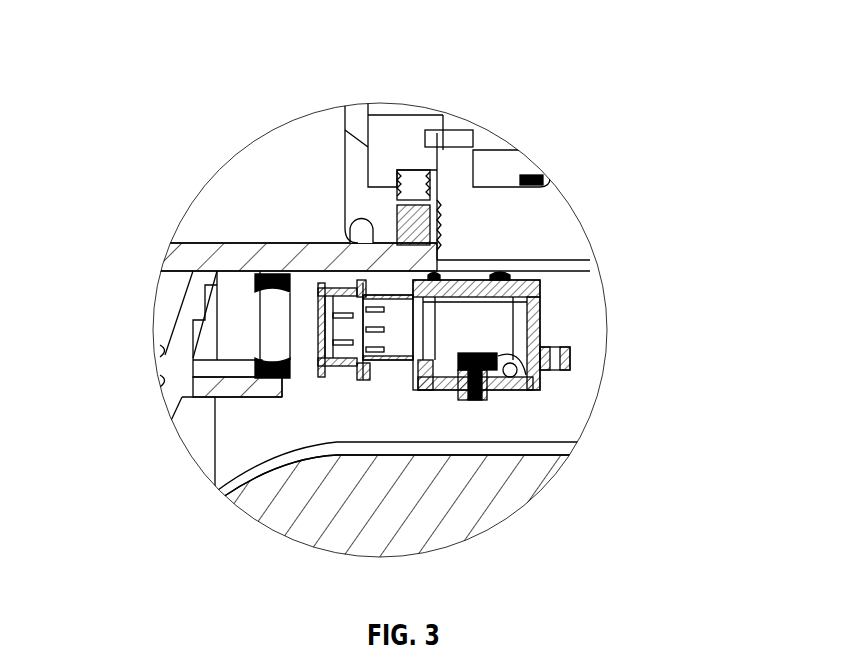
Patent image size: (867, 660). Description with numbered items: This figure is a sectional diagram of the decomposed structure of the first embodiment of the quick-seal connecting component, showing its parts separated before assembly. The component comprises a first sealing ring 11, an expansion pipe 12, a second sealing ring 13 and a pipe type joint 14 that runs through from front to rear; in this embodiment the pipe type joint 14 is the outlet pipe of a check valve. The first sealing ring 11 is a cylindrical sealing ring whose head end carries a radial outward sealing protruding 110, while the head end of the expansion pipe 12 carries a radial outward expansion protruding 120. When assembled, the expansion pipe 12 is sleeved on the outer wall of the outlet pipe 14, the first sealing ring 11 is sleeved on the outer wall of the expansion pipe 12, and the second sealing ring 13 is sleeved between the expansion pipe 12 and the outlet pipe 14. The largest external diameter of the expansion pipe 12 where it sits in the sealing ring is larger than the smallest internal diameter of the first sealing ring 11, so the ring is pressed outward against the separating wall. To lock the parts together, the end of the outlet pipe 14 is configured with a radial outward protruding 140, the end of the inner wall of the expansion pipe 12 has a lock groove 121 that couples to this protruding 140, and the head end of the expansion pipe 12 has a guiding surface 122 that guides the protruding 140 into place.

The first sealing ring 11 is at (260, 282).
The sealing protruding 110 is at (282, 278).
The expansion pipe 12 is at (348, 347).
The expansion protruding 120 is at (366, 378).
The lock groove 121 is at (323, 365).
The guiding surface 122 is at (370, 377).
The protruding 140 is at (362, 285).
The second sealing ring 13 is at (440, 272).
The pipe type joint 14 is at (398, 347).